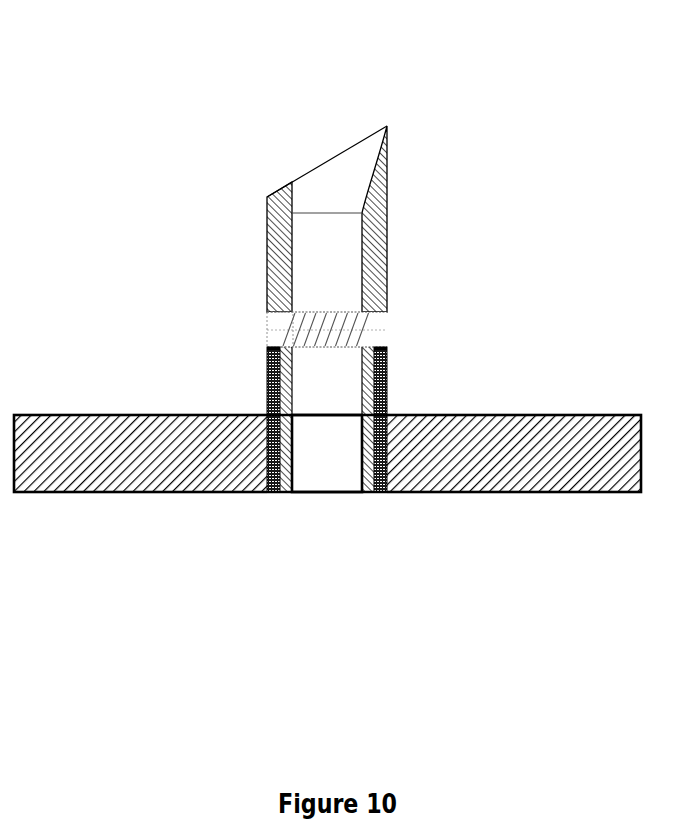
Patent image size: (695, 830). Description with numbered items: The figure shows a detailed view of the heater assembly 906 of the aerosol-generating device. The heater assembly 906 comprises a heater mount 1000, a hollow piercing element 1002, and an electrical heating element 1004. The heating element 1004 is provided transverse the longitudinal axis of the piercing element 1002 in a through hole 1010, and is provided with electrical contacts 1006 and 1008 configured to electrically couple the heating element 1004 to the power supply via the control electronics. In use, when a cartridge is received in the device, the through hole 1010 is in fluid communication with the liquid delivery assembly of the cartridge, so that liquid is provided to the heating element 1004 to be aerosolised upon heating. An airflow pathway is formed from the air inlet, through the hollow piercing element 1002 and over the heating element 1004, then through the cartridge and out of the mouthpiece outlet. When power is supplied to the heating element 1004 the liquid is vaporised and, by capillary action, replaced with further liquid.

The heater assembly 906 is at (327, 357).
The heater mount 1000 is at (426, 417).
The hollow piercing element 1002 is at (383, 167).
The electrical heating element 1004 is at (352, 338).
The electrical contact 1006 is at (277, 493).
The electrical contact 1008 is at (375, 493).
The through hole 1010 is at (273, 337).